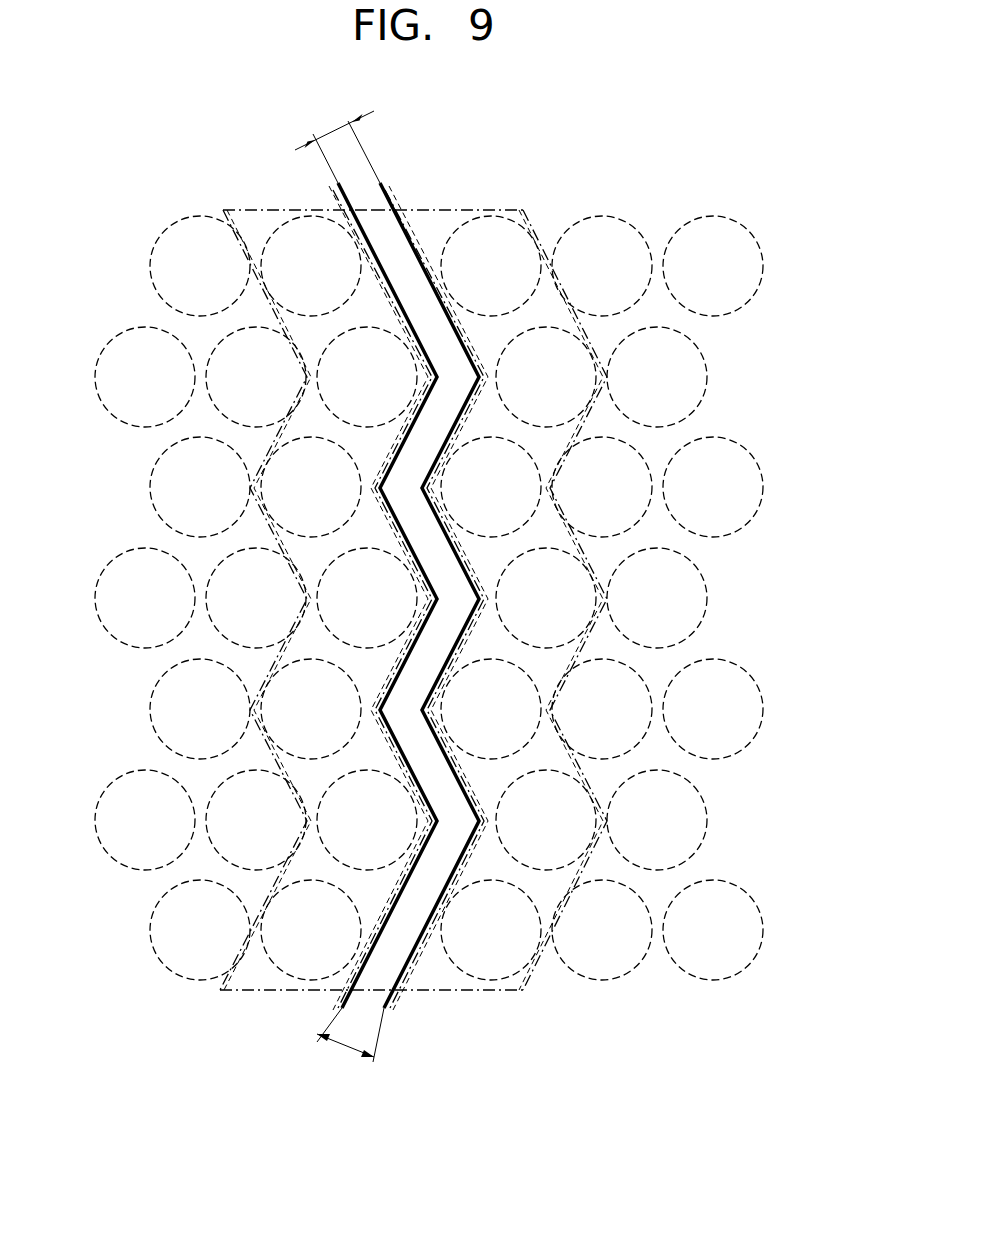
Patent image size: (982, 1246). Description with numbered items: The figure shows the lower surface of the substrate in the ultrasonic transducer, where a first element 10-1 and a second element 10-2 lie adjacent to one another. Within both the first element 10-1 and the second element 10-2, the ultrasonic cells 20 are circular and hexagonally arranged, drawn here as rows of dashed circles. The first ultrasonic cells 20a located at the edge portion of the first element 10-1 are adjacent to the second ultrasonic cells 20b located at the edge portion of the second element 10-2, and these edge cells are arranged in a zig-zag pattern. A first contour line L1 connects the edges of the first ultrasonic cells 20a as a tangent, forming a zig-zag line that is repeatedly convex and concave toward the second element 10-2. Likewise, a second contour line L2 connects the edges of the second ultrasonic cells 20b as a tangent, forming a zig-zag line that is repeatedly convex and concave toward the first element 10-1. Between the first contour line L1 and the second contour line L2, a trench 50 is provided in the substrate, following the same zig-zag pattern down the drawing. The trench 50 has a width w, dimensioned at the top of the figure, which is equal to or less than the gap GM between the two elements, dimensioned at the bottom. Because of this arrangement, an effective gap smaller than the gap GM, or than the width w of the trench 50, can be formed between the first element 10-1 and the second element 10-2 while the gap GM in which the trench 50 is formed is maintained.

The first element 10-1 is at (113, 266).
The second element 10-2 is at (775, 245).
The ultrasonic cells 20 is at (712, 218).
The first ultrasonic cells 20a is at (242, 210).
The second ultrasonic cells 20b is at (465, 208).
The trench 50 is at (403, 922).
The first contour line L1 is at (330, 205).
The second contour line L2 is at (400, 197).
The width w is at (337, 144).
The gap GM is at (350, 1041).